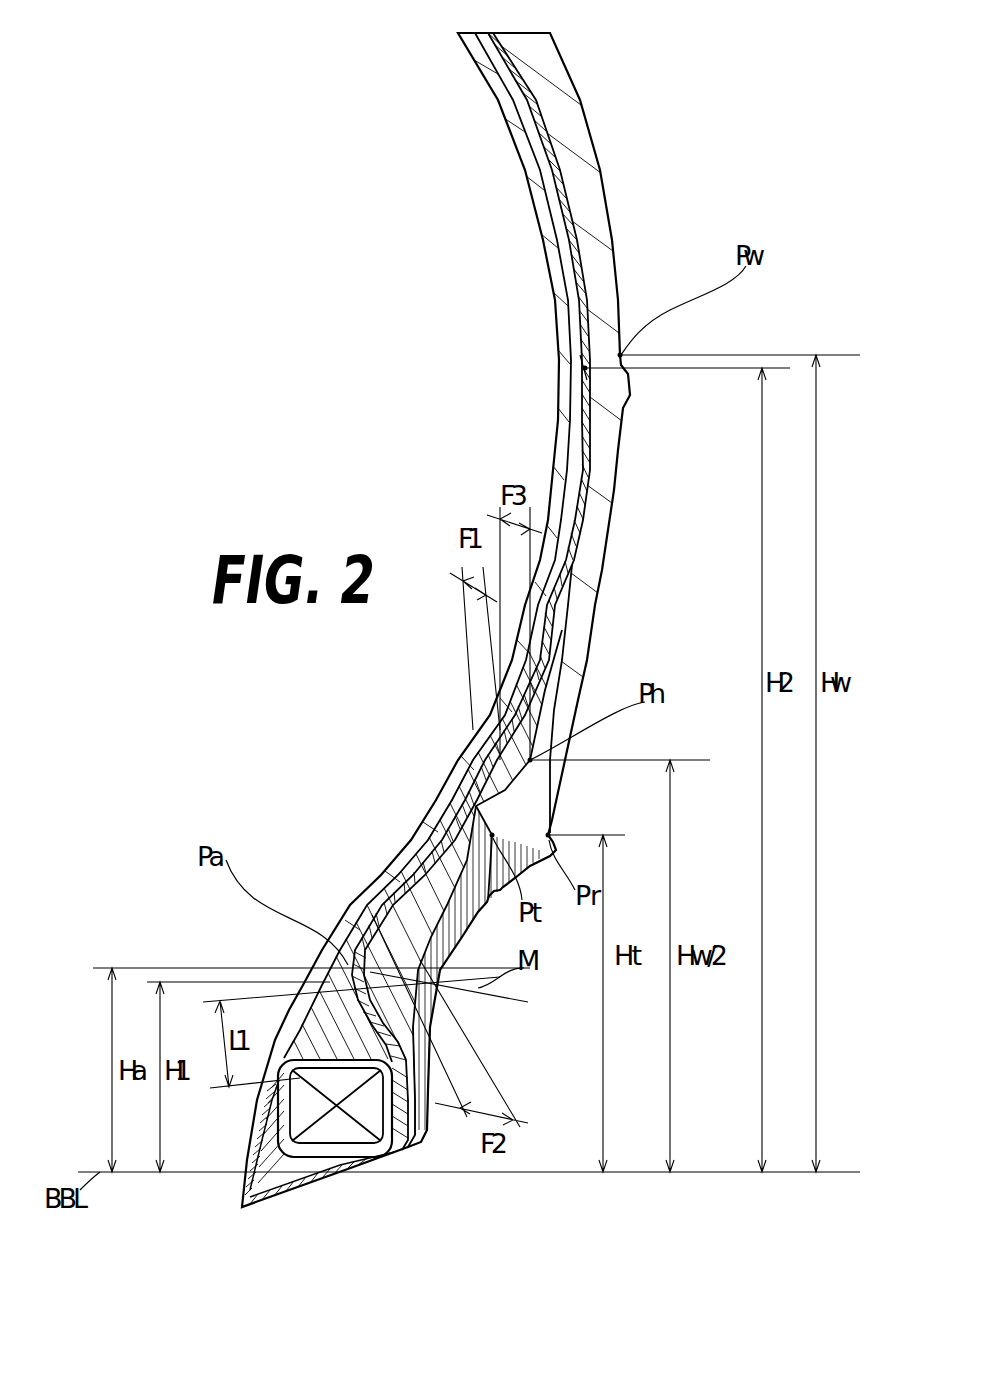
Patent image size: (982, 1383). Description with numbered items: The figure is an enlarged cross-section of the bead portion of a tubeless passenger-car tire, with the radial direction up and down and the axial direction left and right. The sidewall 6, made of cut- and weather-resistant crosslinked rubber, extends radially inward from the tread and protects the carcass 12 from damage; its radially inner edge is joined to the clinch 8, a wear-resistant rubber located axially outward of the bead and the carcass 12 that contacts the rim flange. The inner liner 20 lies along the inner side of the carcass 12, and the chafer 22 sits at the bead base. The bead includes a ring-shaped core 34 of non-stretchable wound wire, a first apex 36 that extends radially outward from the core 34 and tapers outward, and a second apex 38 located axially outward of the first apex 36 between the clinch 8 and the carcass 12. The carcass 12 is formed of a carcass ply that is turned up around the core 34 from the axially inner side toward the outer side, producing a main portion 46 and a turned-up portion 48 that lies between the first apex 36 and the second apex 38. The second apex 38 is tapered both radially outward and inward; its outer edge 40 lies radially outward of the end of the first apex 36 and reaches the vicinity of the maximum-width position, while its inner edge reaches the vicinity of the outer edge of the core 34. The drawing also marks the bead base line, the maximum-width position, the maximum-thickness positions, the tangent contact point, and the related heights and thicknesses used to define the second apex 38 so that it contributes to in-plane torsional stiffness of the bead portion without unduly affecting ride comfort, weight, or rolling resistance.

The sidewall 6 is at (560, 117).
The clinch 8 is at (418, 1108).
The carcass 12 is at (520, 103).
The inner liner 20 is at (480, 48).
The chafer 22 is at (328, 1180).
The core 34 is at (305, 1102).
The first apex 36 is at (310, 1083).
The second apex 38 is at (400, 918).
The outer edge 40 is at (585, 368).
The main portion 46 is at (447, 800).
The turned-up portion 48 is at (412, 842).